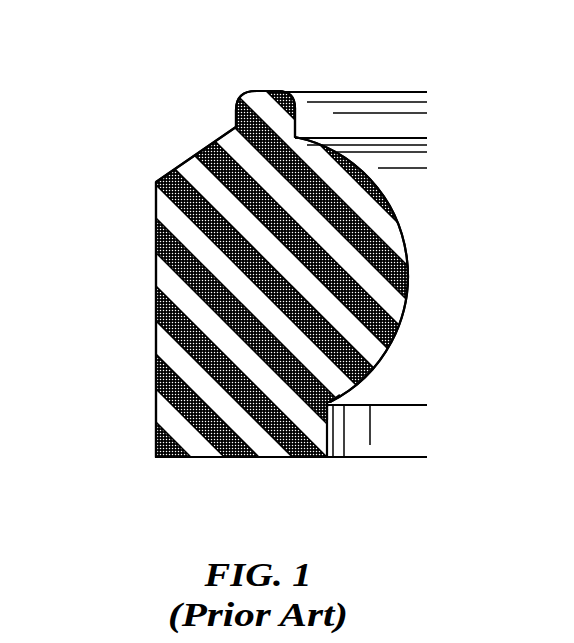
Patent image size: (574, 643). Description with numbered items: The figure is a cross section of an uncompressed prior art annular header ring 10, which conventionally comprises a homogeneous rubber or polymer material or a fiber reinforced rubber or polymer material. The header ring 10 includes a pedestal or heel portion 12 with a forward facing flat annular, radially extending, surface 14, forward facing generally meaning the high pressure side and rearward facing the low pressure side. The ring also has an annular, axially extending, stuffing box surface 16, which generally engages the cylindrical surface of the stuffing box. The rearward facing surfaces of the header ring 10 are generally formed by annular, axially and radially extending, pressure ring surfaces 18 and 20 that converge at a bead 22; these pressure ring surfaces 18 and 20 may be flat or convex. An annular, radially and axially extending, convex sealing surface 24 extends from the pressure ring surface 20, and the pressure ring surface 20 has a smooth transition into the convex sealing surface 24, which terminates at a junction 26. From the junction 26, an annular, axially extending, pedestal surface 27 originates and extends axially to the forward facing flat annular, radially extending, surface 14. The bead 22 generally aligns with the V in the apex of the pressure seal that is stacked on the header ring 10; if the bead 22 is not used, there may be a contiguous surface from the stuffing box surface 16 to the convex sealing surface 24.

The annular header ring 10 is at (287, 321).
The pedestal or heel portion 12 is at (190, 428).
The forward facing flat annular, radially extending, surface 14 is at (252, 458).
The annular, axially extending, stuffing box surface 16 is at (157, 398).
The pressure ring surface 18 is at (183, 162).
The pressure ring surface 20 is at (343, 158).
The bead 22 is at (250, 90).
The convex sealing surface 24 is at (410, 264).
The junction 26 is at (330, 401).
The pedestal surface 27 is at (340, 417).